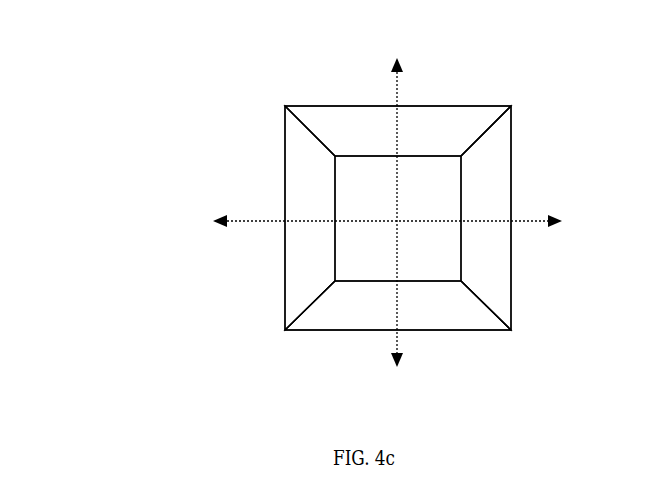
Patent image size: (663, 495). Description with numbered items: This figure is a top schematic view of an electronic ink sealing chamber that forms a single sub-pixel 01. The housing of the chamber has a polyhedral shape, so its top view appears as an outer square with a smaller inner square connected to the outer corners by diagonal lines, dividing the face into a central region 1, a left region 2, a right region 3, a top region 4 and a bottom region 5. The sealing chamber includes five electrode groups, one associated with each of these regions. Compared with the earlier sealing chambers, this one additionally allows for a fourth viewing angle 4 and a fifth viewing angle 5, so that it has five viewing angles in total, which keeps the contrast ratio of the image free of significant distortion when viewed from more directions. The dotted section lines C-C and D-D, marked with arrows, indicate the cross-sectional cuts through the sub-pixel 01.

The sub-pixel 01 is at (332, 212).
The central region 1 is at (398, 218).
The left side region 2 is at (310, 218).
The right side region 3 is at (486, 218).
The fourth viewing angle 4 is at (398, 131).
The fifth viewing angle 5 is at (398, 305).